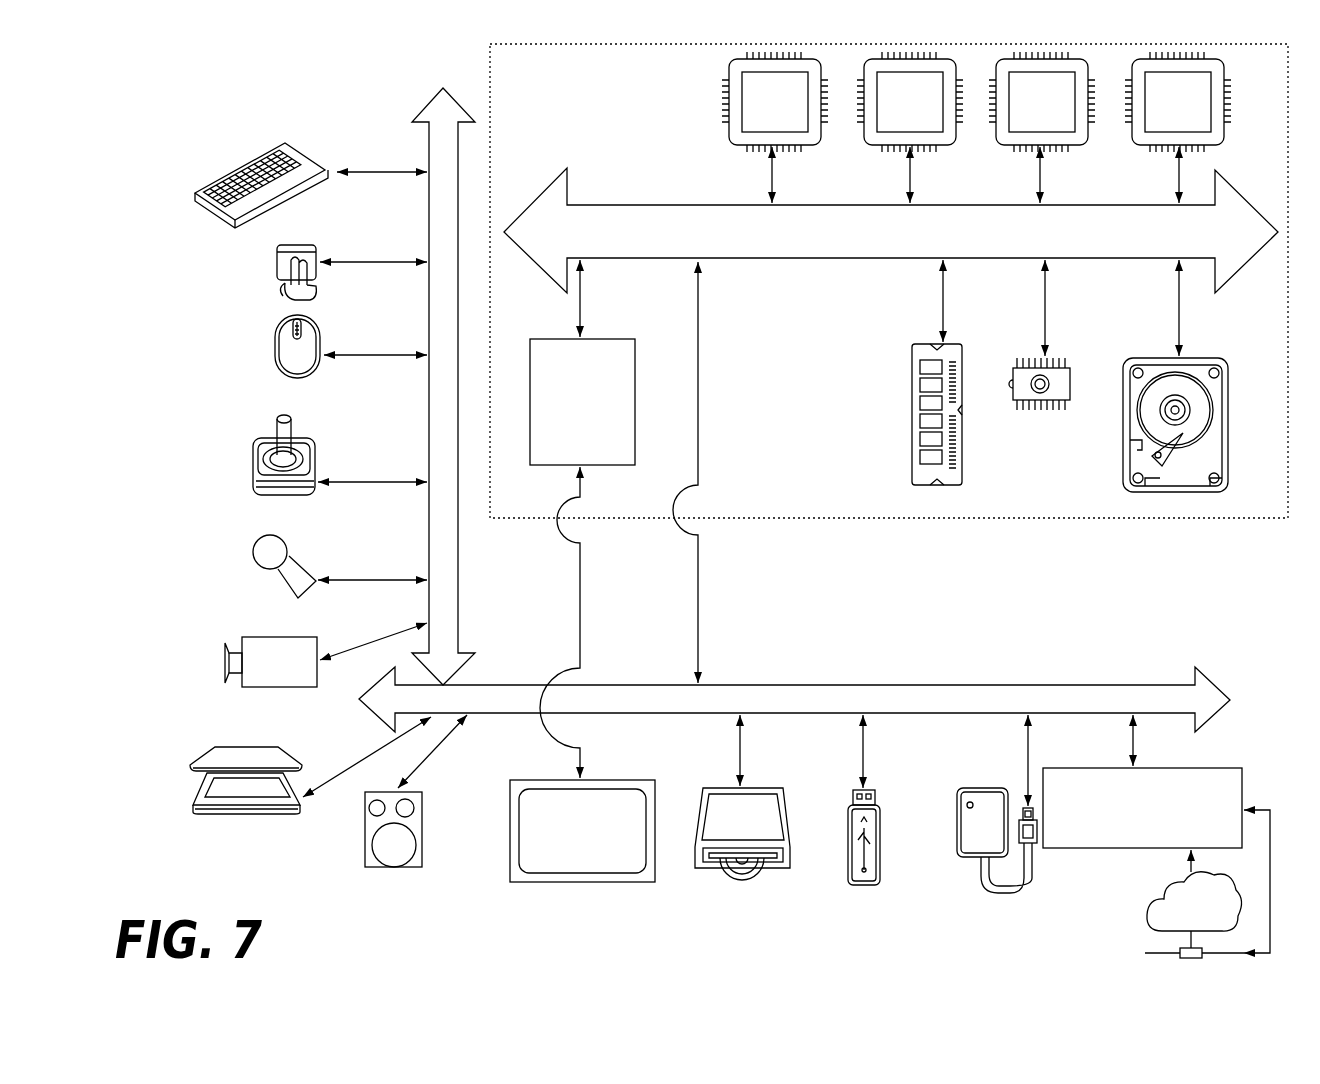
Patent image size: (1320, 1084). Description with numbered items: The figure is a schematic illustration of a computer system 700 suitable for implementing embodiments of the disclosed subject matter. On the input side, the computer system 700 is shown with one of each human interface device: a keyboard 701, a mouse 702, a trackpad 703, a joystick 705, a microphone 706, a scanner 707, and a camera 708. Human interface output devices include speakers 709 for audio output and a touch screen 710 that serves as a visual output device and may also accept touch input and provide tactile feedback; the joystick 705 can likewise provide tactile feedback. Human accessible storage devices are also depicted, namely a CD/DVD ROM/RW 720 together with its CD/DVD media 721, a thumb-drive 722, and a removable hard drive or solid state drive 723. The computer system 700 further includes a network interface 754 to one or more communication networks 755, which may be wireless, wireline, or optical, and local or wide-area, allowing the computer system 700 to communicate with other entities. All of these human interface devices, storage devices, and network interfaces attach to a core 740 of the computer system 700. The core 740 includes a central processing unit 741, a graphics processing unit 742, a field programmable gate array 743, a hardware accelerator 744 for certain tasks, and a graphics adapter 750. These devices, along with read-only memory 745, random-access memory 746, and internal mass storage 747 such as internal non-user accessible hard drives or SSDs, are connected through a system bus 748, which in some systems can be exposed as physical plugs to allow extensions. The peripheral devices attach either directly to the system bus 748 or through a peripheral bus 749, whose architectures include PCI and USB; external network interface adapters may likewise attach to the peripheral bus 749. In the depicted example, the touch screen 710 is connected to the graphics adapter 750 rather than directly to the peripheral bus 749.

The computer system 700 is at (240, 128).
The keyboard 701 is at (190, 197).
The mouse 702 is at (276, 346).
The trackpad 703 is at (275, 268).
The joystick 705 is at (252, 480).
The microphone 706 is at (253, 554).
The scanner 707 is at (192, 804).
The camera 708 is at (225, 662).
The speakers 709 is at (393, 868).
The touch screen 710 is at (578, 884).
The CD/DVD ROM/RW 720 is at (786, 872).
The CD/DVD media 721 is at (728, 872).
The thumb-drive 722 is at (868, 887).
The removable hard drive or solid state drive 723 is at (966, 858).
The core 740 is at (880, 520).
The central processing unit 741 is at (775, 127).
The graphics processing unit 742 is at (910, 127).
The field programmable gate array 743 is at (1042, 127).
The hardware accelerator 744 is at (1178, 127).
The read-only memory 745 is at (1037, 408).
The random-access memory 746 is at (906, 440).
The internal mass storage 747 is at (1140, 356).
The system bus 748 is at (891, 230).
The peripheral bus 749 is at (426, 134).
The graphics adapter 750 is at (582, 519).
The network interface 754 is at (1156, 834).
The communication network 755 is at (1146, 922).